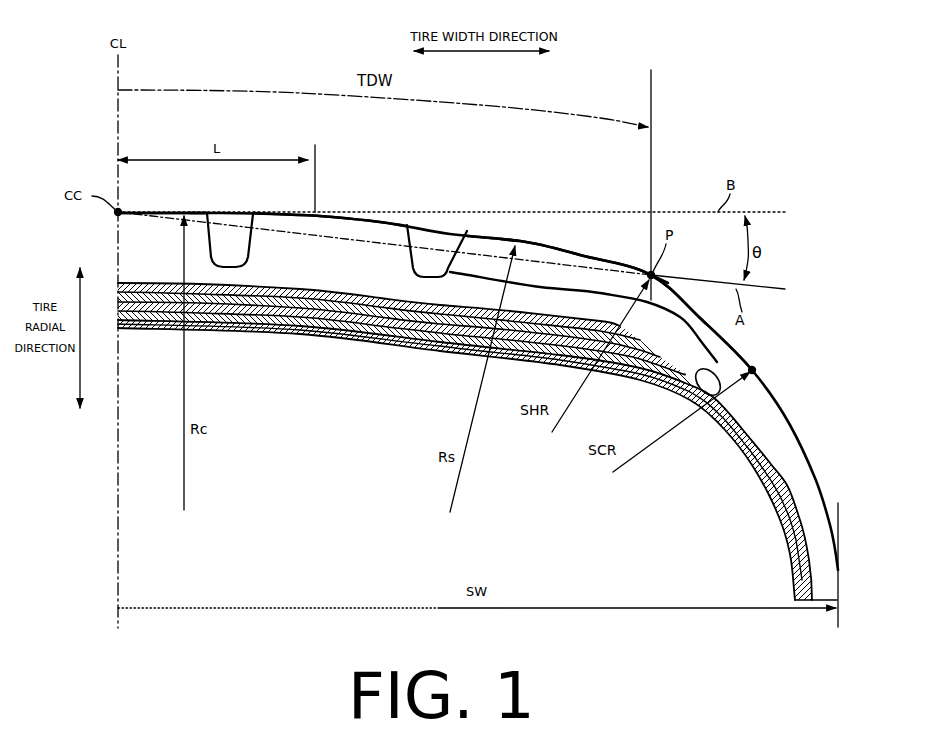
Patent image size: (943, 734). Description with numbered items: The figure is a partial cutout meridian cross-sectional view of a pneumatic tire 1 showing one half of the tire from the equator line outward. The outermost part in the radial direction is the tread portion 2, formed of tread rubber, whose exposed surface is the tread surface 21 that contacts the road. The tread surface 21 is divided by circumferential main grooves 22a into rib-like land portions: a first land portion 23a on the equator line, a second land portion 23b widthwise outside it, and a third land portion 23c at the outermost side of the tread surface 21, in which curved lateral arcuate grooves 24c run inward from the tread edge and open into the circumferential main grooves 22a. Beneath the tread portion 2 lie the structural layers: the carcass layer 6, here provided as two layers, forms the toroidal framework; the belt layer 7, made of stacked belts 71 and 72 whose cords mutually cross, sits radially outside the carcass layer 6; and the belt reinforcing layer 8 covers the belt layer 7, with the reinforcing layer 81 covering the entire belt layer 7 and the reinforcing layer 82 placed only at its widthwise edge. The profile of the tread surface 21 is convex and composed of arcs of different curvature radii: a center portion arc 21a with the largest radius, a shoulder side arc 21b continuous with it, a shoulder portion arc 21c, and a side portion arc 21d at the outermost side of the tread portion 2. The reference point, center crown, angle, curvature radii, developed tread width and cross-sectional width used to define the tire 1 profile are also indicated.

The pneumatic tire 1 is at (779, 96).
The tread portion 2 is at (370, 216).
The carcass layer 6 is at (783, 484).
The belt layer 7 is at (371, 378).
The belt reinforcing layer 8 is at (726, 480).
The tread surface 21 is at (399, 220).
The center portion arc 21a is at (199, 211).
The shoulder side arc 21b is at (508, 238).
The shoulder portion arc 21c is at (662, 278).
The side portion arc 21d is at (760, 370).
The circumferential main groove 22a is at (248, 222).
The first land portion 23a is at (190, 212).
The second land portion 23b is at (330, 212).
The third land portion 23c is at (560, 240).
The arcuate groove 24c is at (590, 270).
The belt 71 is at (358, 314).
The belt 72 is at (328, 300).
The reinforcing layer 81 is at (700, 392).
The reinforcing layer 82 is at (714, 405).